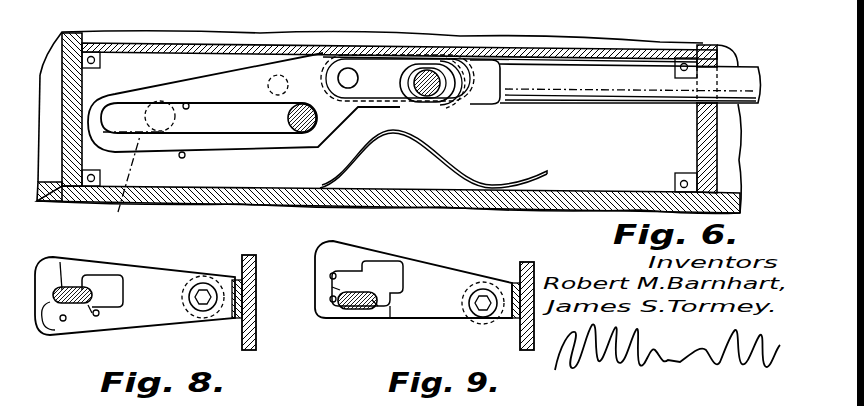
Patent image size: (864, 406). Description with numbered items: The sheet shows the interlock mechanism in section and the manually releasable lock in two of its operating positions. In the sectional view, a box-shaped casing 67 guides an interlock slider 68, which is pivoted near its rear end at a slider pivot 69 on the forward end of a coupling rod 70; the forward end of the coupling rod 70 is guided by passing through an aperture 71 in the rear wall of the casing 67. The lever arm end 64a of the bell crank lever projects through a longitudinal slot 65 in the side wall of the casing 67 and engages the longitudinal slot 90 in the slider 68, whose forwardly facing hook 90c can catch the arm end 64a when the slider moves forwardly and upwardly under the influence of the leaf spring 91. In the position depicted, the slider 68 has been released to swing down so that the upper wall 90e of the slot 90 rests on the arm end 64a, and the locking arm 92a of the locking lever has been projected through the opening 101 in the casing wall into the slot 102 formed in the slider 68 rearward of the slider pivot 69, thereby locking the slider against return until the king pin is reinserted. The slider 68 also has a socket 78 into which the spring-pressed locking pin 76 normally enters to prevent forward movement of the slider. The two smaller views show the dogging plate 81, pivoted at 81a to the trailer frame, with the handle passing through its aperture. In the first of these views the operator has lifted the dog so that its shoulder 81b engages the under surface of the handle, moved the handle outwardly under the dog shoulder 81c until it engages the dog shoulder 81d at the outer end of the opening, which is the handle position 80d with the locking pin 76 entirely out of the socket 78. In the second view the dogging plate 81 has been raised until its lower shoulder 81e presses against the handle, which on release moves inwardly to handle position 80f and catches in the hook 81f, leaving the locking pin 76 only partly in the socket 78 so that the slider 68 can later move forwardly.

In FIG. 6, the lever arm end 64a is at (164, 103).
In FIG. 6, the longitudinal slot 65 is at (244, 139).
In FIG. 6, the box-shaped casing 67 is at (557, 43).
In FIG. 6, the interlock slider 68 is at (255, 84).
In FIG. 6, the slider pivot 69 is at (350, 76).
In FIG. 6, the coupling rod 70 is at (630, 83).
In FIG. 6, the aperture 71 is at (722, 62).
In FIG. 6, the locking pin 76 is at (472, 62).
In FIG. 6, the socket 78 is at (287, 75).
In FIG. 6, the longitudinal slot 90 is at (258, 130).
In FIG. 6, the forwardly facing hook 90c is at (186, 158).
In FIG. 6, the upper wall of slot 90e is at (189, 104).
In FIG. 6, the leaf spring 91 is at (450, 163).
In FIG. 6, the locking arm 92a is at (448, 106).
In FIG. 6, the opening 101 is at (440, 66).
In FIG. 6, the slot 102 is at (410, 92).
In FIG. 8, the handle position 80d is at (66, 318).
In FIG. 9, the handle position 80f is at (360, 303).
In FIG. 8, the dogging plate 81 is at (145, 302).
In FIG. 9, the dogging plate 81 is at (424, 295).
In FIG. 8, the pivot 81a is at (80, 277).
In FIG. 9, the pivot 81a is at (360, 264).
In FIG. 8, the dog shoulder 81b is at (96, 316).
In FIG. 9, the dog shoulder 81b is at (390, 318).
In FIG. 8, the dog shoulder 81c is at (60, 262).
In FIG. 9, the dog shoulder 81c is at (330, 275).
In FIG. 8, the dog shoulder 81d is at (53, 330).
In FIG. 9, the dog shoulder 81d is at (333, 289).
In FIG. 8, the lower shoulder 81e is at (63, 322).
In FIG. 9, the lower shoulder 81e is at (331, 302).
In FIG. 8, the hook 81f is at (92, 313).
In FIG. 9, the hook 81f is at (368, 306).